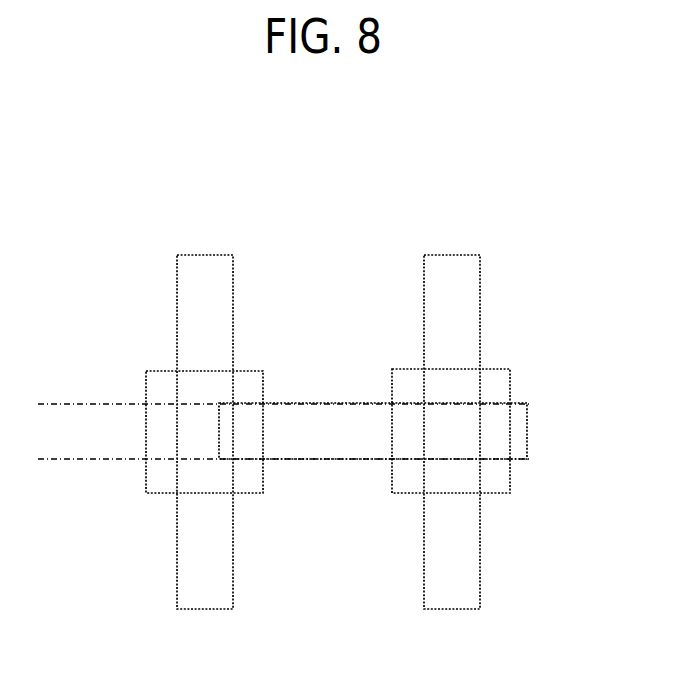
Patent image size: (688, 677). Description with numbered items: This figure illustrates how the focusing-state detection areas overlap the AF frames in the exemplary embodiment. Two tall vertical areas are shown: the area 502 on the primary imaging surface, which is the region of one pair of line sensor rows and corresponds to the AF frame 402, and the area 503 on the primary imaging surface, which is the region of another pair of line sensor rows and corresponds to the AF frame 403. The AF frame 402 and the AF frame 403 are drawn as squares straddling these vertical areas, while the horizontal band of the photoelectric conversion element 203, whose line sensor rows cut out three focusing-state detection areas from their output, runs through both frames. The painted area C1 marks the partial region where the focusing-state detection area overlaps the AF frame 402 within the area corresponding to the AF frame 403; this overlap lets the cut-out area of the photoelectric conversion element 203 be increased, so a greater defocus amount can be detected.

The focusing-state detection area on the primary imaging surface 502 is at (208, 253).
The focusing-state detection area on the primary imaging surface 503 is at (453, 253).
The AF frame 402 is at (156, 370).
The AF frame 403 is at (510, 368).
The photoelectric conversion element 203 is at (528, 437).
The painted area C1 is at (246, 459).